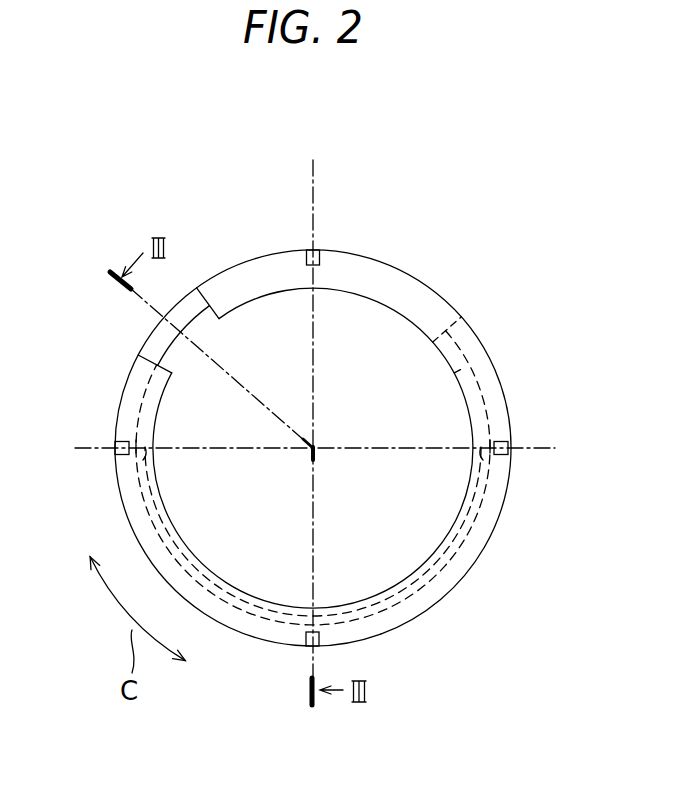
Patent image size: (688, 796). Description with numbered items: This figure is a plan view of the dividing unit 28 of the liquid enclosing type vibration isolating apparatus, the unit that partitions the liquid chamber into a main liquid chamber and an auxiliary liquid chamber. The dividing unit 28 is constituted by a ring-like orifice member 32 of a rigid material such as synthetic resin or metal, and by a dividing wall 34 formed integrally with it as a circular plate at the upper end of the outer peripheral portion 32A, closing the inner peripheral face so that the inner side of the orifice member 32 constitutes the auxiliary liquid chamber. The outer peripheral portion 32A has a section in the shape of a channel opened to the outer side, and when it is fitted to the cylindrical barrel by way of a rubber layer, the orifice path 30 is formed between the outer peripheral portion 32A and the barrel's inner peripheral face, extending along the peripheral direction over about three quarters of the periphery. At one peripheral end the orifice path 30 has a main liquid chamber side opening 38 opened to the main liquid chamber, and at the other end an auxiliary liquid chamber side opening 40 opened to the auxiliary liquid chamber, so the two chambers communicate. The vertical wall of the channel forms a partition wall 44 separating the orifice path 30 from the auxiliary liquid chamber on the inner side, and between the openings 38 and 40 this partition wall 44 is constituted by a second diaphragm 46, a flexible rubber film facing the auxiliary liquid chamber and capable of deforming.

The dividing unit 28 is at (333, 128).
The orifice path 30 is at (480, 525).
The orifice member 32 is at (428, 305).
The outer peripheral portion 32A is at (440, 597).
The dividing wall 34 is at (343, 330).
The main liquid chamber side opening 38 is at (185, 310).
The auxiliary liquid chamber side opening 40 is at (480, 347).
The partition wall 44 is at (462, 413).
The second diaphragm 46 is at (370, 618).